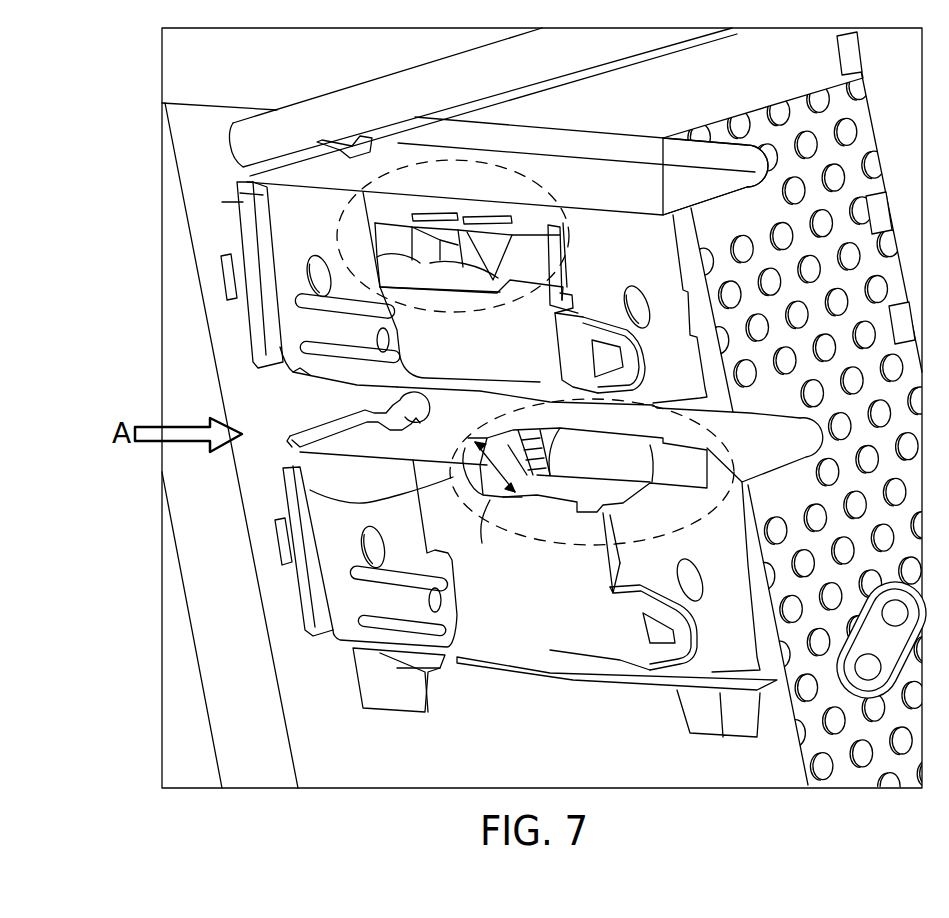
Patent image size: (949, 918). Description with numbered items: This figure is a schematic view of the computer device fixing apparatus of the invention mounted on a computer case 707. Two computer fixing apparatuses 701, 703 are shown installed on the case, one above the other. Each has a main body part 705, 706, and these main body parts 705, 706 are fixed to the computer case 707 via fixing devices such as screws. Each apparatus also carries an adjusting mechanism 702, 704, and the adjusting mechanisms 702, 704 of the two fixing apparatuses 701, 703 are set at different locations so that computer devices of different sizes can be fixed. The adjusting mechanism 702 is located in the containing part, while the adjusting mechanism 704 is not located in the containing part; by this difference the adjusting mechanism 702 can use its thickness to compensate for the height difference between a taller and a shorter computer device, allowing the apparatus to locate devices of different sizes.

The computer fixing apparatus 701 is at (263, 195).
The adjusting mechanism 702 is at (337, 235).
The computer fixing apparatus 703 is at (305, 595).
The adjusting mechanism 704 is at (467, 445).
The main body part 705 is at (300, 367).
The main body part 706 is at (330, 540).
The computer case 707 is at (383, 765).